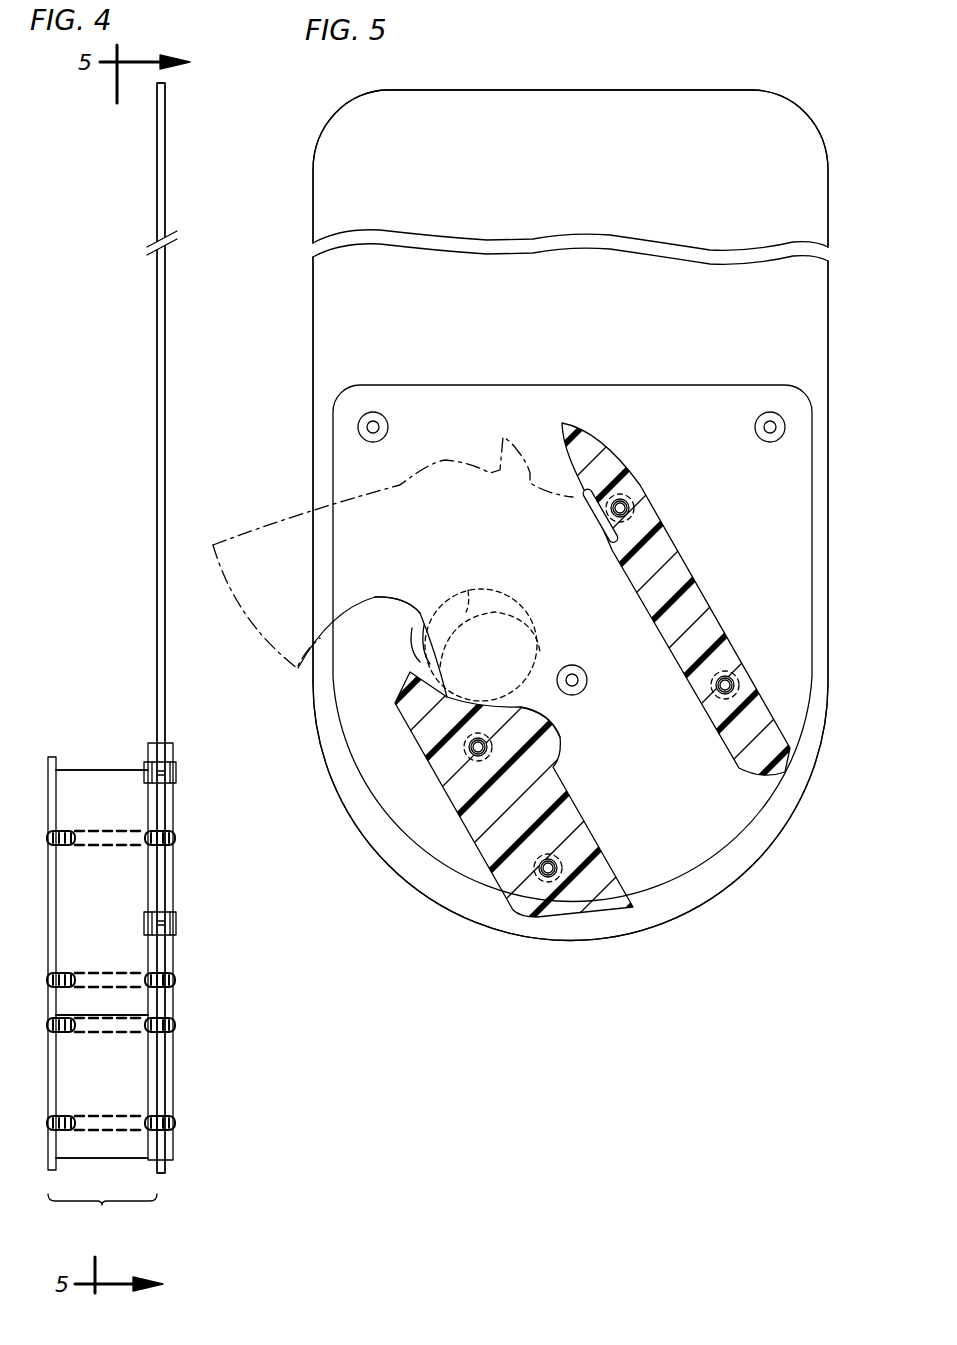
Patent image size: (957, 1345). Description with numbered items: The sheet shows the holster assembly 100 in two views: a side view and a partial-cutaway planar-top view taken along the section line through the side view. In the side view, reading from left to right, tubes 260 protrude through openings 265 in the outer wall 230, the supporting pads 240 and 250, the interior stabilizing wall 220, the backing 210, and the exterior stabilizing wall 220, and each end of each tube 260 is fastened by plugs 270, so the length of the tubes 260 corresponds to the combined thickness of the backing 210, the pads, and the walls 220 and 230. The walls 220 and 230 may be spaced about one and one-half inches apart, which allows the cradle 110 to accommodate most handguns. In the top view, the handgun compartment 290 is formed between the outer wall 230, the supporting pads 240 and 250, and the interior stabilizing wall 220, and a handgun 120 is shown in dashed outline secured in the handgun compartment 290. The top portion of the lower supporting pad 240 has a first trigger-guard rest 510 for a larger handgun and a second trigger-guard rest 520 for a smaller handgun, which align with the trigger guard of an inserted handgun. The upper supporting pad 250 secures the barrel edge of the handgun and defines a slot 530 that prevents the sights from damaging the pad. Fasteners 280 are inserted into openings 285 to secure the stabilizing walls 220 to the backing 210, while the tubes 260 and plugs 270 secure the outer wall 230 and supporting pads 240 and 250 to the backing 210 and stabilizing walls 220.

In FIG. 4, the holster assembly 100 is at (212, 104).
In FIG. 5, the holster assembly 100 is at (628, 80).
In FIG. 4, the cradle 110 is at (102, 1215).
In FIG. 5, the handgun 120 is at (283, 520).
In FIG. 4, the backing 210 is at (158, 201).
In FIG. 5, the backing 210 is at (317, 213).
In FIG. 4, the stabilizing wall 220 is at (150, 746).
In FIG. 5, the stabilizing wall 220 is at (403, 392).
In FIG. 4, the outer wall 230 is at (50, 762).
In FIG. 4, the lower supporting pad 240 is at (80, 1158).
In FIG. 5, the lower supporting pad 240 is at (612, 878).
In FIG. 4, the upper supporting pad 250 is at (148, 1002).
In FIG. 5, the upper supporting pad 250 is at (760, 750).
In FIG. 4, the tube 260 is at (125, 848).
In FIG. 5, the tube 260 is at (632, 508).
In FIG. 4, the opening 265 is at (108, 830).
In FIG. 5, the opening 265 is at (610, 508).
In FIG. 4, the plug 270 is at (176, 838).
In FIG. 5, the plug 270 is at (628, 495).
In FIG. 4, the fastener 280 is at (177, 771).
In FIG. 5, the fastener 280 is at (385, 420).
In FIG. 4, the opening 285 is at (164, 778).
In FIG. 5, the opening 285 is at (388, 436).
In FIG. 5, the handgun compartment 290 is at (545, 596).
In FIG. 5, the first trigger-guard rest 510 is at (432, 686).
In FIG. 5, the second trigger-guard rest 520 is at (532, 686).
In FIG. 5, the slot 530 is at (602, 532).